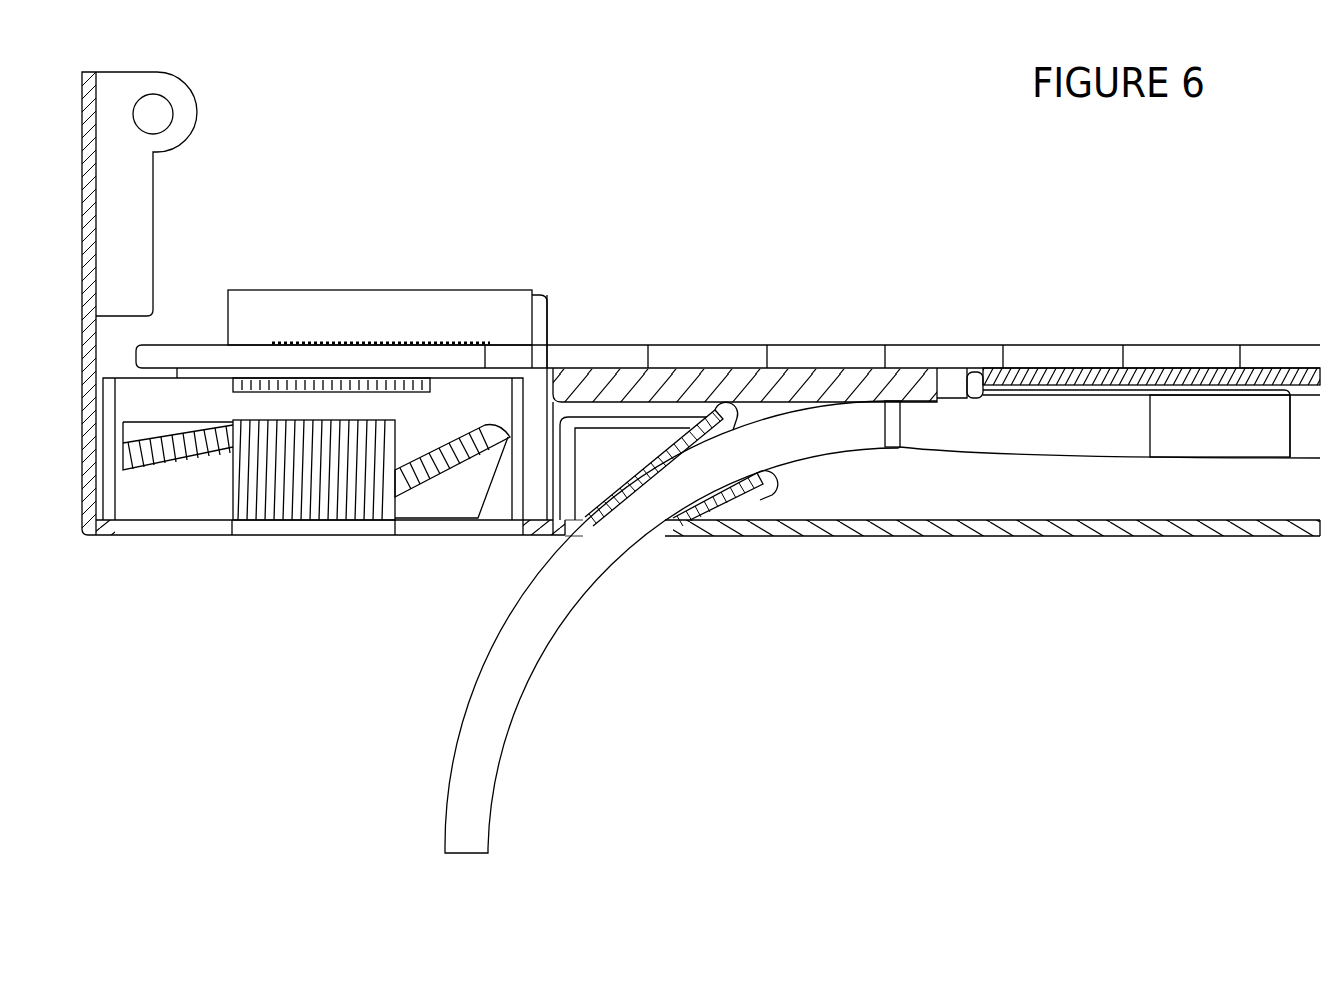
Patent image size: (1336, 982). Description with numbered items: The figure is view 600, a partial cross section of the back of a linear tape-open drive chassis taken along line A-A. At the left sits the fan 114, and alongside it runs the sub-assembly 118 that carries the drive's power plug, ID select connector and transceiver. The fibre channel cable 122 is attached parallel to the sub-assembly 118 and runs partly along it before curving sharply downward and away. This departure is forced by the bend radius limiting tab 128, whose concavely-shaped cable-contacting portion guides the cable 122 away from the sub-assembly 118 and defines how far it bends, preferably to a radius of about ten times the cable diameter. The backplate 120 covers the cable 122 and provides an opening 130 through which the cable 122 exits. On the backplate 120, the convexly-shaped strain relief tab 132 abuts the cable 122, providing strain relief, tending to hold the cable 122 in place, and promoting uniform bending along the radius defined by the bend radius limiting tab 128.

The fan 114 is at (274, 542).
The sub-assembly 118 is at (851, 341).
The backplate 120 is at (1129, 540).
The fibre channel cable 122 is at (691, 627).
The bend radius limiting tab 128 is at (636, 462).
The opening 130 is at (651, 542).
The strain relief tab 132 is at (722, 510).
The view 600 is at (1137, 742).